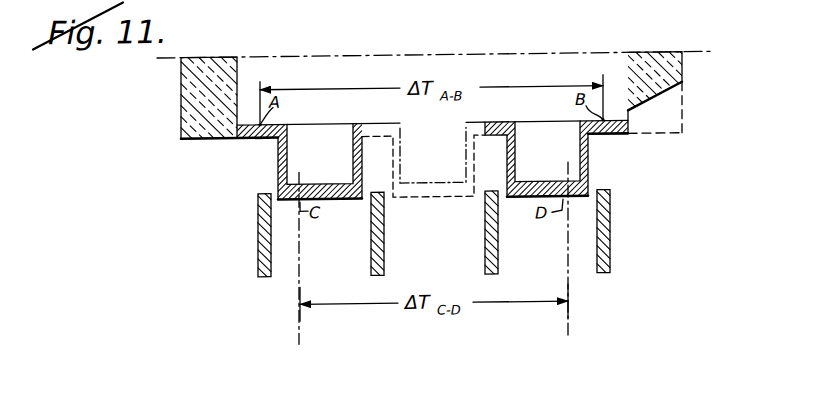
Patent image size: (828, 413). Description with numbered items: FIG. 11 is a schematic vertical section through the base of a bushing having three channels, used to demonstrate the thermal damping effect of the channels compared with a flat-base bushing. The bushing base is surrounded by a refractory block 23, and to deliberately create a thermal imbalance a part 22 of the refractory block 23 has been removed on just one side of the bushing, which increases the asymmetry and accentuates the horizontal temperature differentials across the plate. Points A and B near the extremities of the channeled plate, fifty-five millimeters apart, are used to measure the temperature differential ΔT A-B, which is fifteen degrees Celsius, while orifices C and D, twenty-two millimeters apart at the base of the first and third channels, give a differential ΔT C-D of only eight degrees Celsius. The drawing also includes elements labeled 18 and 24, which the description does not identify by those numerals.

The hidden cup-shaped depression 18 is at (431, 204).
The part of the refractory block 22 is at (668, 119).
The refractory block 23 is at (182, 112).
The sheet material with formed cups 24 is at (432, 128).